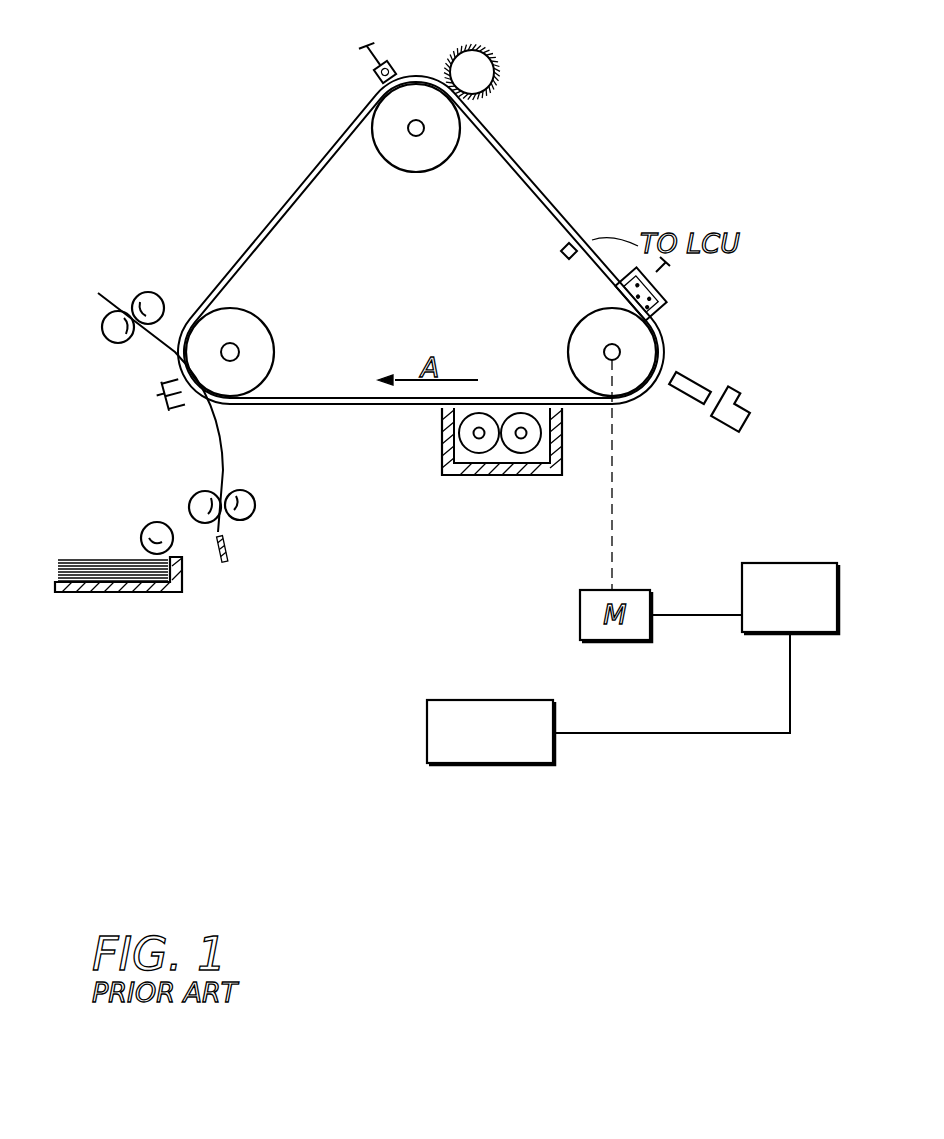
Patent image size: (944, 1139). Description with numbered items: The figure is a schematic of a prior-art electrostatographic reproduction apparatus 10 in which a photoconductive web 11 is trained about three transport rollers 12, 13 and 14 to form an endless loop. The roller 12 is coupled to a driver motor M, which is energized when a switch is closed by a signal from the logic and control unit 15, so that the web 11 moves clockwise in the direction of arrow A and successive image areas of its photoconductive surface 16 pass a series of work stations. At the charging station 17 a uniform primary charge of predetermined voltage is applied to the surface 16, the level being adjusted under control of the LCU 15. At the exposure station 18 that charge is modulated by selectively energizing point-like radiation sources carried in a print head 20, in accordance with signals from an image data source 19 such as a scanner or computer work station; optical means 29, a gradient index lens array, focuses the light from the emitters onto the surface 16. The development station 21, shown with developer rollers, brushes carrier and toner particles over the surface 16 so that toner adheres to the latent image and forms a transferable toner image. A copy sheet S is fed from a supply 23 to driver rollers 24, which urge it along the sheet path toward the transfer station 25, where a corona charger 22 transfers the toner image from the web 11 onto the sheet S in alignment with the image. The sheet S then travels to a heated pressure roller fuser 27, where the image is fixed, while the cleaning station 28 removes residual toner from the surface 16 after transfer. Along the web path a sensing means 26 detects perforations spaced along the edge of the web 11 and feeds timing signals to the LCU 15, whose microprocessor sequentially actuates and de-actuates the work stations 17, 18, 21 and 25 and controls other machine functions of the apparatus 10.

The electrostatographic reproduction apparatus 10 is at (263, 160).
The photoconductive web 11 is at (262, 237).
The transport roller 12 is at (572, 328).
The transport roller 13 is at (417, 172).
The transport roller 14 is at (268, 330).
The logic and control unit 15 is at (742, 582).
The photoconductive surface 16 is at (560, 217).
The charging station 17 is at (668, 306).
The exposure station 18 is at (710, 374).
The image data source 19 is at (438, 700).
The print head 20 is at (718, 430).
The development station 21 is at (470, 505).
The corona charger 22 is at (140, 402).
The supply 23 is at (138, 592).
The driver rollers 24 is at (190, 500).
The transfer station 25 is at (156, 437).
The means for sensing web perforations 26 is at (561, 252).
The heated pressure roller fuser 27 is at (102, 307).
The cleaning station 28 is at (494, 58).
The optical means 29 is at (680, 398).
The copy sheet S is at (153, 340).